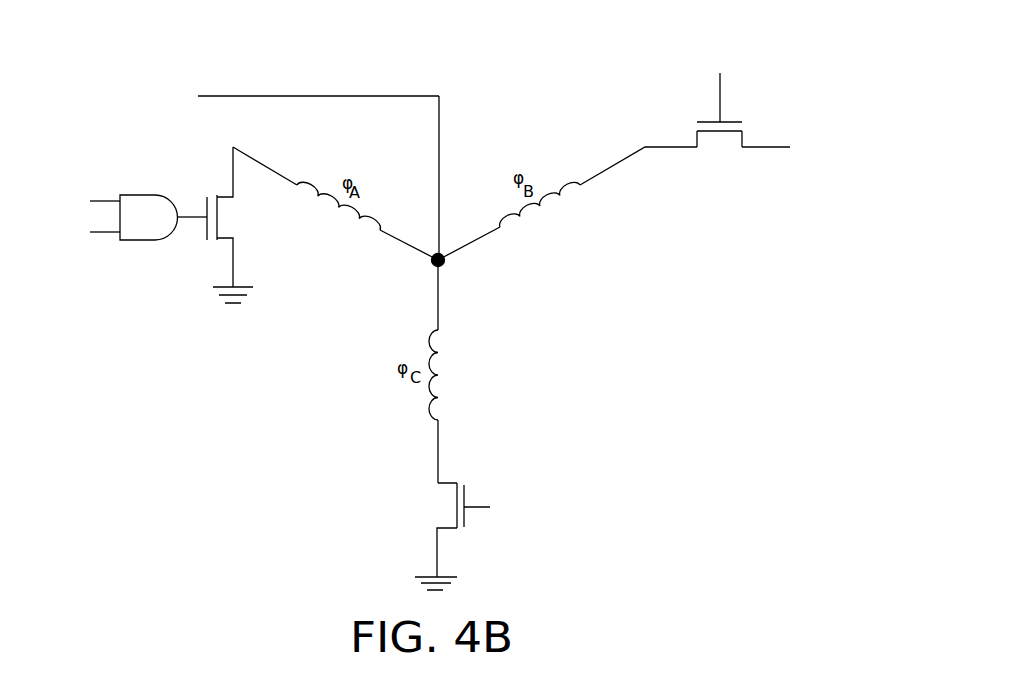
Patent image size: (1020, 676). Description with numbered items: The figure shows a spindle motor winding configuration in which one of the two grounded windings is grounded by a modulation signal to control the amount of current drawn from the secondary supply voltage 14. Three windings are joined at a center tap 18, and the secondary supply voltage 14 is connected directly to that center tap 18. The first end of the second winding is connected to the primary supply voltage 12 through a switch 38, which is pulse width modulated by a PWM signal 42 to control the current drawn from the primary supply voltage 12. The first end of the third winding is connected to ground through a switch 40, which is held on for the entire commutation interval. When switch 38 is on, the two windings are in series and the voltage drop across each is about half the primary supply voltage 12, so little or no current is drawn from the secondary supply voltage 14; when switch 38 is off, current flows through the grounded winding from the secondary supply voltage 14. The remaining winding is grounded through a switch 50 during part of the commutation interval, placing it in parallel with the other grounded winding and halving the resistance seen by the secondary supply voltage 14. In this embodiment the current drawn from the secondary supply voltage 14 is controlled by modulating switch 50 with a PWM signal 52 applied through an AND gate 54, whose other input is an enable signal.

The primary supply voltage 12 is at (768, 148).
The secondary supply voltage 14 is at (212, 97).
The center tap 18 is at (452, 265).
The switch 38 is at (718, 152).
The switch 40 is at (468, 470).
The PWM signal 42 is at (719, 91).
The switch 50 is at (243, 218).
The PWM signal 52 is at (105, 195).
The AND gate 54 is at (142, 241).